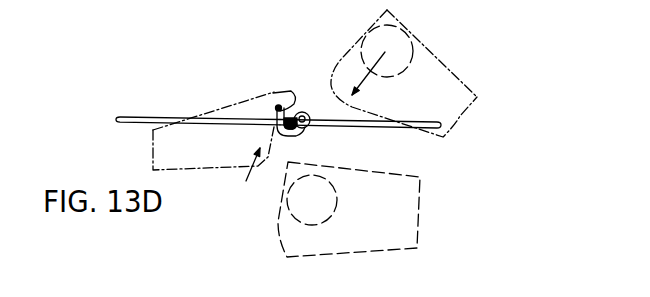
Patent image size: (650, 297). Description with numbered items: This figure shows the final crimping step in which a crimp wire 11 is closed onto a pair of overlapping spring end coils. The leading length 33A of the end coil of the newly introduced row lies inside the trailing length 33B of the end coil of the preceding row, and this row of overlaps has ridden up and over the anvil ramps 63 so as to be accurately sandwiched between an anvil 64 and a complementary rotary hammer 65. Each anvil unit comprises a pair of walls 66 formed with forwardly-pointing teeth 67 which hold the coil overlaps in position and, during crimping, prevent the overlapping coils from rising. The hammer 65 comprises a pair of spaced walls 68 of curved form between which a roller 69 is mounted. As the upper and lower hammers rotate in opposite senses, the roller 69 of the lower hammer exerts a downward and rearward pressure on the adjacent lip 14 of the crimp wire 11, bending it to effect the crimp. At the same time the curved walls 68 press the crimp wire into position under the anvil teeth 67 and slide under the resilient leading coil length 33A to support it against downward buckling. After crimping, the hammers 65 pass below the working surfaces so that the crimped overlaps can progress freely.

The wire 11 is at (278, 108).
The lip 14 is at (303, 131).
The leading length of end coil 33A is at (158, 118).
The trailing length of end coil 33B is at (376, 119).
The anvil ramp 63 is at (237, 102).
The anvil 64 is at (244, 176).
The rotary hammer 65 is at (443, 42).
The anvil wall 66 is at (212, 142).
The anvil tooth 67 is at (287, 90).
The hammer wall 68 is at (440, 88).
The roller 69 is at (383, 32).